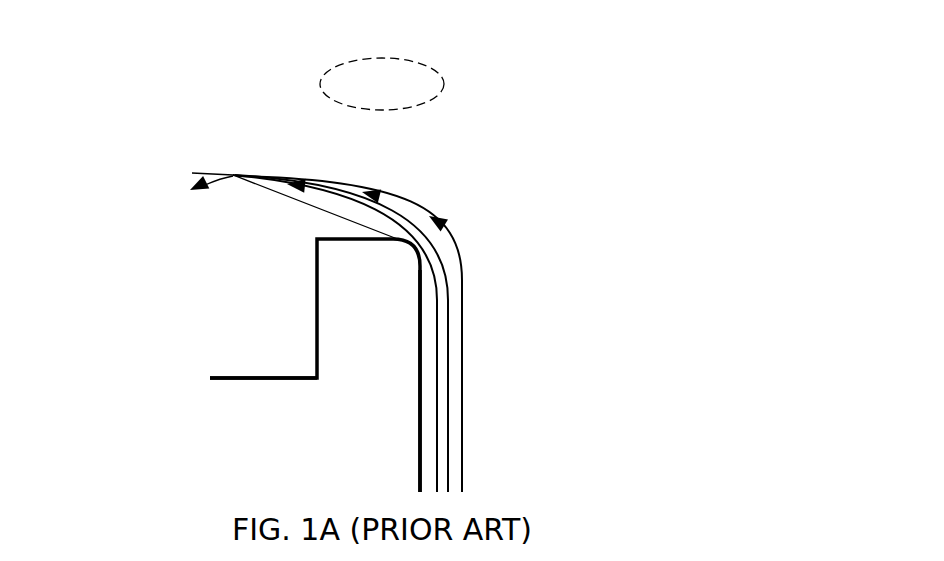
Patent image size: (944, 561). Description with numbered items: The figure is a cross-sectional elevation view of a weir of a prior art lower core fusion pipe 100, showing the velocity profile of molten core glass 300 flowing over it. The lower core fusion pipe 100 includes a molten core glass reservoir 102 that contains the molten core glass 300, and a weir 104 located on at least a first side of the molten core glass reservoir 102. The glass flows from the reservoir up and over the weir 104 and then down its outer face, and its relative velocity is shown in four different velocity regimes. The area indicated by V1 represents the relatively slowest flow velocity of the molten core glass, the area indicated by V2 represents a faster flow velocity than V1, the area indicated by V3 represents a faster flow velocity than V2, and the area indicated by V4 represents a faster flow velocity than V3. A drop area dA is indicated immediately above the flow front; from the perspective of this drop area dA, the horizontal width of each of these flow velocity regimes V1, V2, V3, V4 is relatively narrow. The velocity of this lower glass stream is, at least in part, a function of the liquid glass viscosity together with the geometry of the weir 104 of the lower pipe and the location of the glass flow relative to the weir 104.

The drop area dA is at (385, 83).
The lower core fusion pipe 100 is at (160, 352).
The molten core glass reservoir 102 is at (267, 380).
The weir 104 is at (353, 407).
The molten core glass 300 is at (238, 290).
The relatively slowest flow velocity area V1 is at (233, 174).
The second flow velocity area V2 is at (318, 180).
The third flow velocity area V3 is at (393, 203).
The fastest flow velocity area V4 is at (447, 222).